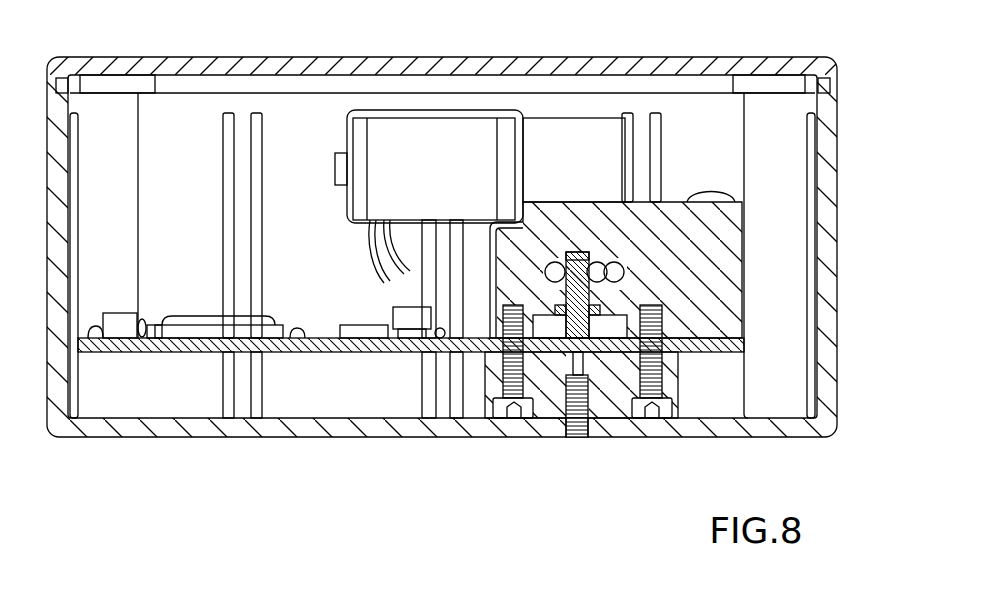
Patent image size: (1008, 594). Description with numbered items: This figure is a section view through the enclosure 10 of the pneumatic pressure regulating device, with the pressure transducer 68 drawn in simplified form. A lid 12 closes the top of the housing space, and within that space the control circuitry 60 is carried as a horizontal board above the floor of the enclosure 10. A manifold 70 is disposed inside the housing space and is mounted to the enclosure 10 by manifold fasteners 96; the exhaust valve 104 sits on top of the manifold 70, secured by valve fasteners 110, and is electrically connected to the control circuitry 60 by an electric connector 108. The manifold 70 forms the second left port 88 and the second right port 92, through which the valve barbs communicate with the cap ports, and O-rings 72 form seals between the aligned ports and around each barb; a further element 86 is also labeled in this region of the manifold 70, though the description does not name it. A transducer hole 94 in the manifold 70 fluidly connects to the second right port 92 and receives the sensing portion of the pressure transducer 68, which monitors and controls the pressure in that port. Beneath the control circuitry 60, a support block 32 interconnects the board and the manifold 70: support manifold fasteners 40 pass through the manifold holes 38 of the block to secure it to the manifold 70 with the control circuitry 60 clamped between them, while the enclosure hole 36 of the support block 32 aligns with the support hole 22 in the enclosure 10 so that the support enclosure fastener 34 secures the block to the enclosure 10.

The enclosure 10 is at (836, 210).
The lid 12 is at (771, 59).
The support hole 22 is at (585, 436).
The support block 32 is at (679, 391).
The support enclosure fastener 34 is at (567, 434).
The enclosure hole 36 is at (581, 364).
The manifold hole 38 is at (495, 412).
The support manifold fastener 40 is at (498, 330).
The control circuitry 60 is at (187, 352).
The pressure transducer 68 is at (572, 352).
The manifold 70 is at (745, 262).
The O-ring 72 is at (556, 305).
The bearing 86 is at (550, 267).
The second left port 88 is at (621, 273).
The second right port 92 is at (606, 267).
The transducer hole 94 is at (577, 252).
The manifold fastener 96 is at (721, 192).
The exhaust valve 104 is at (355, 133).
The electric connector 108 is at (365, 246).
The valve fastener 110 is at (566, 108).